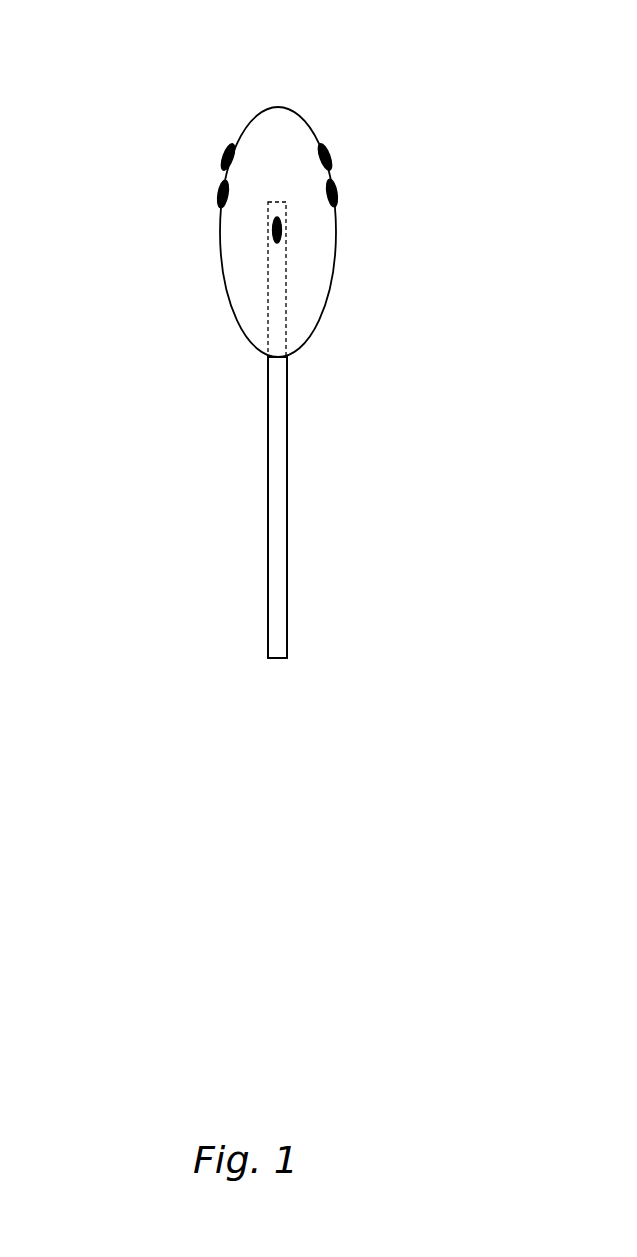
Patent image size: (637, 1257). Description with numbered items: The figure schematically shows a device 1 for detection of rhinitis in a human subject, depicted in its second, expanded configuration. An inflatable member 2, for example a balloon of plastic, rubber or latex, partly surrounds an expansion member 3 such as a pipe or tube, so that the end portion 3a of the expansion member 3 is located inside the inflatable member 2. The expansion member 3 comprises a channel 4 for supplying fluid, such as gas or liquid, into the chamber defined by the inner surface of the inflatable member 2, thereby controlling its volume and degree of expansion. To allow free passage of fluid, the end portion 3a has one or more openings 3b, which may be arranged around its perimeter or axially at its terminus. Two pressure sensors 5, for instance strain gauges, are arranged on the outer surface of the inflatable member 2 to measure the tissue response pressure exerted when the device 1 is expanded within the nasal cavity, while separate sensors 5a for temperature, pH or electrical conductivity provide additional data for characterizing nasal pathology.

The device 1 is at (207, 718).
The inflatable member 2 is at (317, 318).
The expansion member 3 is at (287, 430).
The end portion 3a is at (282, 200).
The opening 3b is at (272, 230).
The channel 4 is at (278, 402).
The pressure sensor 5 is at (221, 194).
The sensor 5a is at (224, 157).